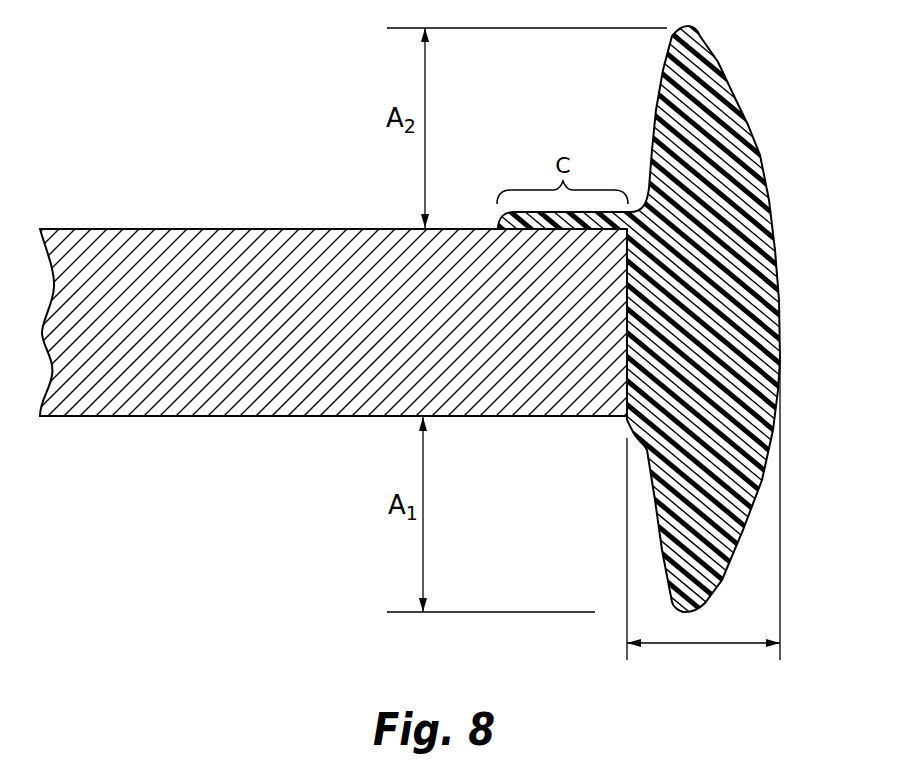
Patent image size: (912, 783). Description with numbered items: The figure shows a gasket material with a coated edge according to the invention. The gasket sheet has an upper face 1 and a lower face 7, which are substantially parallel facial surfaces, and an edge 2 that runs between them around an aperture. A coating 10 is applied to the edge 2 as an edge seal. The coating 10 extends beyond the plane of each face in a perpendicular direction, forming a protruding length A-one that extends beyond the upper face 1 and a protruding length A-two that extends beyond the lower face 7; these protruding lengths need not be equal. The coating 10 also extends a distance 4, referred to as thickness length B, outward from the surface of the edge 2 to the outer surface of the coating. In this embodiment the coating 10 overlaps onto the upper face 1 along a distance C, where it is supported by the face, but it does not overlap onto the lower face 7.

The upper face 1 is at (183, 228).
The lower face 7 is at (188, 417).
The edge 2 is at (622, 338).
The coating 10 is at (760, 155).
The distance 4 is at (703, 510).